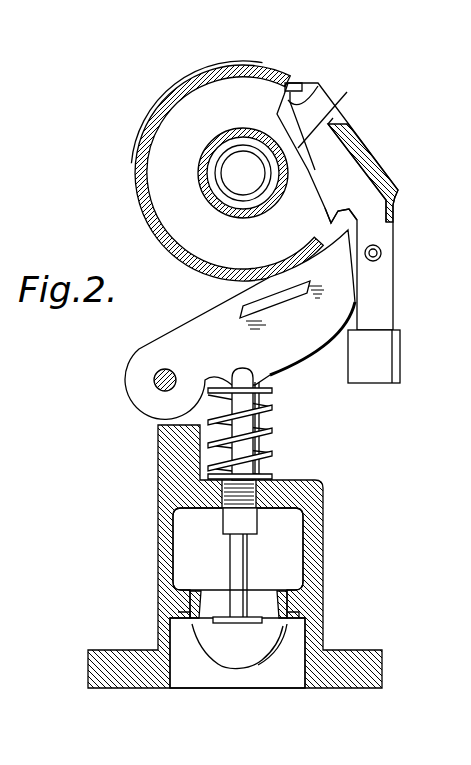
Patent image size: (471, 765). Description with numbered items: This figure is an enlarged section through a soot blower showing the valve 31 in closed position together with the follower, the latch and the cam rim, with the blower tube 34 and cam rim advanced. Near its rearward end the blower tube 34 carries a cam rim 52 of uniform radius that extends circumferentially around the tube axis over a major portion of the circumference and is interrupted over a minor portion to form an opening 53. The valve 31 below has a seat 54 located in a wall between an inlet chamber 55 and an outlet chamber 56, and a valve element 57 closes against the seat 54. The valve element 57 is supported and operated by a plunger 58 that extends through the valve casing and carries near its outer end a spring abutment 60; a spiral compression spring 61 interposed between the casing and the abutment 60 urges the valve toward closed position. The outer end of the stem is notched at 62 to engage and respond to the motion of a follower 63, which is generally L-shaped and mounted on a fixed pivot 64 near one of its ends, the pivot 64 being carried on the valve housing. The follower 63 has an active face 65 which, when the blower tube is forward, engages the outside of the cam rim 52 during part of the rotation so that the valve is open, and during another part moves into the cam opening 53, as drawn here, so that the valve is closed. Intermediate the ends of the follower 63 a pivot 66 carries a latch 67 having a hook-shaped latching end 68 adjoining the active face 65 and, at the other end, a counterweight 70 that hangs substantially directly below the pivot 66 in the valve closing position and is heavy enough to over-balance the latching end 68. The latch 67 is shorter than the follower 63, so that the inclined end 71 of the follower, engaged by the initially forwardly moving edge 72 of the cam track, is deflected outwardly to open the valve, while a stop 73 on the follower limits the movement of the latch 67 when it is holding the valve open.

The valve 31 is at (323, 527).
The blower tube 34 is at (201, 161).
The cam rim 52 is at (138, 196).
The opening 53 is at (314, 238).
The seat 54 is at (283, 606).
The inlet chamber 55 is at (279, 670).
The outlet chamber 56 is at (290, 546).
The valve element 57 is at (233, 658).
The plunger 58 is at (233, 559).
The spring abutment 60 is at (272, 390).
The spiral compression spring 61 is at (268, 405).
The notch 62 is at (236, 368).
The follower 63 is at (283, 347).
The fixed pivot 64 is at (152, 372).
The active face 65 is at (338, 99).
The pivot 66 is at (382, 253).
The latch 67 is at (352, 175).
The latching end 68 is at (313, 147).
The counterweight 70 is at (377, 347).
The inclined end 71 is at (303, 92).
The forwardly moving edge 72 is at (289, 78).
The stop 73 is at (262, 306).